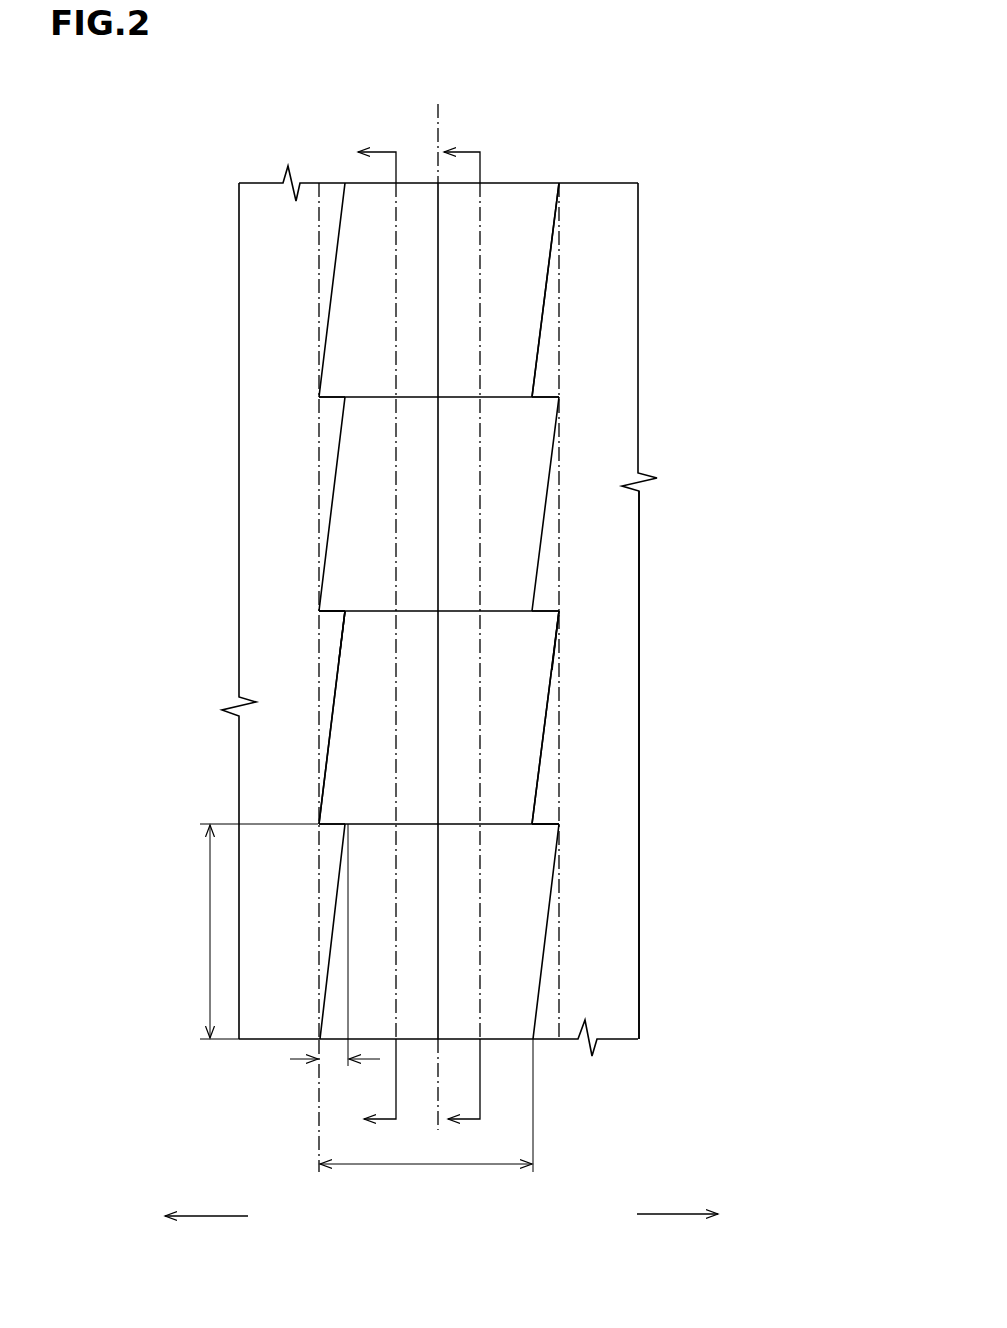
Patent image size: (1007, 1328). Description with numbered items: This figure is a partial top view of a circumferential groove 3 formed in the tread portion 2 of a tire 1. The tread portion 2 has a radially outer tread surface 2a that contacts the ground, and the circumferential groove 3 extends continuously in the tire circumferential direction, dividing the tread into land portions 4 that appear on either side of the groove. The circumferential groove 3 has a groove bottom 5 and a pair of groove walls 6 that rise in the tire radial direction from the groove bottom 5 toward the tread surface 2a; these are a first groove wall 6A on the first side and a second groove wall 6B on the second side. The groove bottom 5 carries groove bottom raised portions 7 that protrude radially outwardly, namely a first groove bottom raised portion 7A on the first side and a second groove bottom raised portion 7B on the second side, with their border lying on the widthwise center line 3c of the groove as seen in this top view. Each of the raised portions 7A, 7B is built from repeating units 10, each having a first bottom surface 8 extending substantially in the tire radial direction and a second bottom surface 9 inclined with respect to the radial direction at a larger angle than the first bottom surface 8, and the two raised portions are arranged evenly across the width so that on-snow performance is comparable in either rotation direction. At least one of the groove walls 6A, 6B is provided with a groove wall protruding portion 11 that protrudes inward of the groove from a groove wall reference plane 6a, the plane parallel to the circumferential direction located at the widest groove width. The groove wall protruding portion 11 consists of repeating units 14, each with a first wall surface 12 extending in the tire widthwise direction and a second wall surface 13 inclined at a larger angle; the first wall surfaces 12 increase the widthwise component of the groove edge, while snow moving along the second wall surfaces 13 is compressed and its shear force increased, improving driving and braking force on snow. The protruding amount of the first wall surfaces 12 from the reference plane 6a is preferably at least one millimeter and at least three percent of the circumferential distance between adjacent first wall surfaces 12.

The tire 1 is at (651, 108).
The tread portion 2 is at (568, 140).
The tread surface 2a is at (598, 473).
The circumferential groove 3 is at (415, 160).
The widthwise center line 3c is at (438, 602).
The land portions 4 is at (273, 283).
The groove bottom 5 is at (492, 227).
The groove walls 6 is at (150, 342).
The first groove wall 6A is at (544, 500).
The second groove wall 6B is at (335, 503).
The groove wall reference plane 6a is at (560, 992).
The groove bottom raised portions 7 is at (737, 634).
The first groove bottom raised portion 7A is at (458, 757).
The second groove bottom raised portion 7B is at (417, 737).
The first bottom surface 8 is at (500, 608).
The step wall 9 is at (507, 650).
The repeating units 10 is at (733, 486).
The groove wall protruding portion 11 is at (330, 633).
The first wall surface 12 is at (332, 608).
The second wall surface 13 is at (347, 658).
The repeating units 14 is at (130, 515).